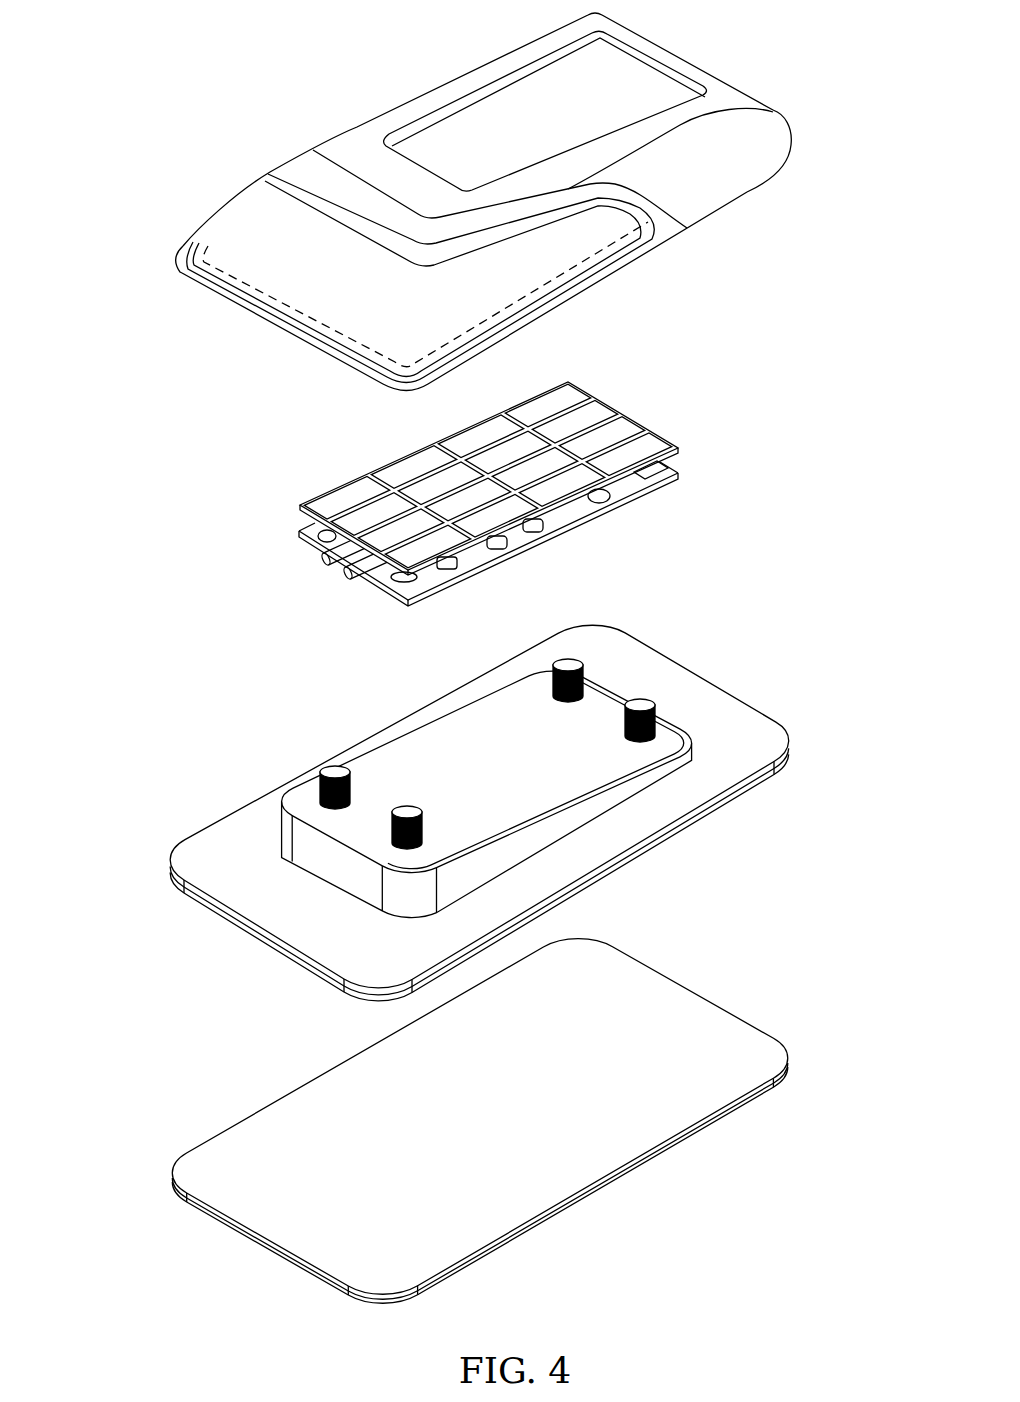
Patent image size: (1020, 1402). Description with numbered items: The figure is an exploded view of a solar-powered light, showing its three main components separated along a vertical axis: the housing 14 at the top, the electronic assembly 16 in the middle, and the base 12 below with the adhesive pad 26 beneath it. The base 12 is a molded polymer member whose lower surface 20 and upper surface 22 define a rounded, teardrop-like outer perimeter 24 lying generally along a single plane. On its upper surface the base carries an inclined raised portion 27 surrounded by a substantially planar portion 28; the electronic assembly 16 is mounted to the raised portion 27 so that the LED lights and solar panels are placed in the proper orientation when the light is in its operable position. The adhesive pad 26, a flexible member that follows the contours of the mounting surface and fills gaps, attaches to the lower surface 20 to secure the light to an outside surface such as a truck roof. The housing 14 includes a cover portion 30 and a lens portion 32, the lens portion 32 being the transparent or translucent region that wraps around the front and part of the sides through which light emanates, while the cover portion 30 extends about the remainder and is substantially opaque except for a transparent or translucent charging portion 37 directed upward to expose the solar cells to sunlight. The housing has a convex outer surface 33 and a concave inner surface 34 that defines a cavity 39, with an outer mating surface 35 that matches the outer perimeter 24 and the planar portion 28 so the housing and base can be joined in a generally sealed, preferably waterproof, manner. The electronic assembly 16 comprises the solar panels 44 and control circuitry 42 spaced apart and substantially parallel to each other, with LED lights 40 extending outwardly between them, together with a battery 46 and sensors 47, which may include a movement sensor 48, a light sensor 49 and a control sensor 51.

The base 12 is at (132, 868).
The housing 14 is at (151, 187).
The electronic assembly 16 is at (222, 549).
The lower surface 20 is at (328, 978).
The upper surface 22 is at (412, 788).
The outer perimeter 24 is at (267, 944).
The adhesive pad 26 is at (226, 1248).
The raised portion 27 is at (360, 755).
The planar portion 28 is at (698, 672).
The cover portion 30 is at (353, 141).
The lens portion 32 is at (210, 262).
The outer surface 33 is at (738, 187).
The inner surface 34 is at (333, 325).
The mating surface 35 is at (580, 290).
The charging portion 37 is at (642, 74).
The cavity 39 is at (308, 313).
The LED lights 40 is at (352, 575).
The control circuitry 42 is at (595, 522).
The solar panels 44 is at (590, 402).
The battery 46 is at (536, 524).
The sensors 47 is at (471, 560).
The movement sensor 48 is at (508, 544).
The light sensor 49 is at (420, 581).
The control sensor 51 is at (318, 531).